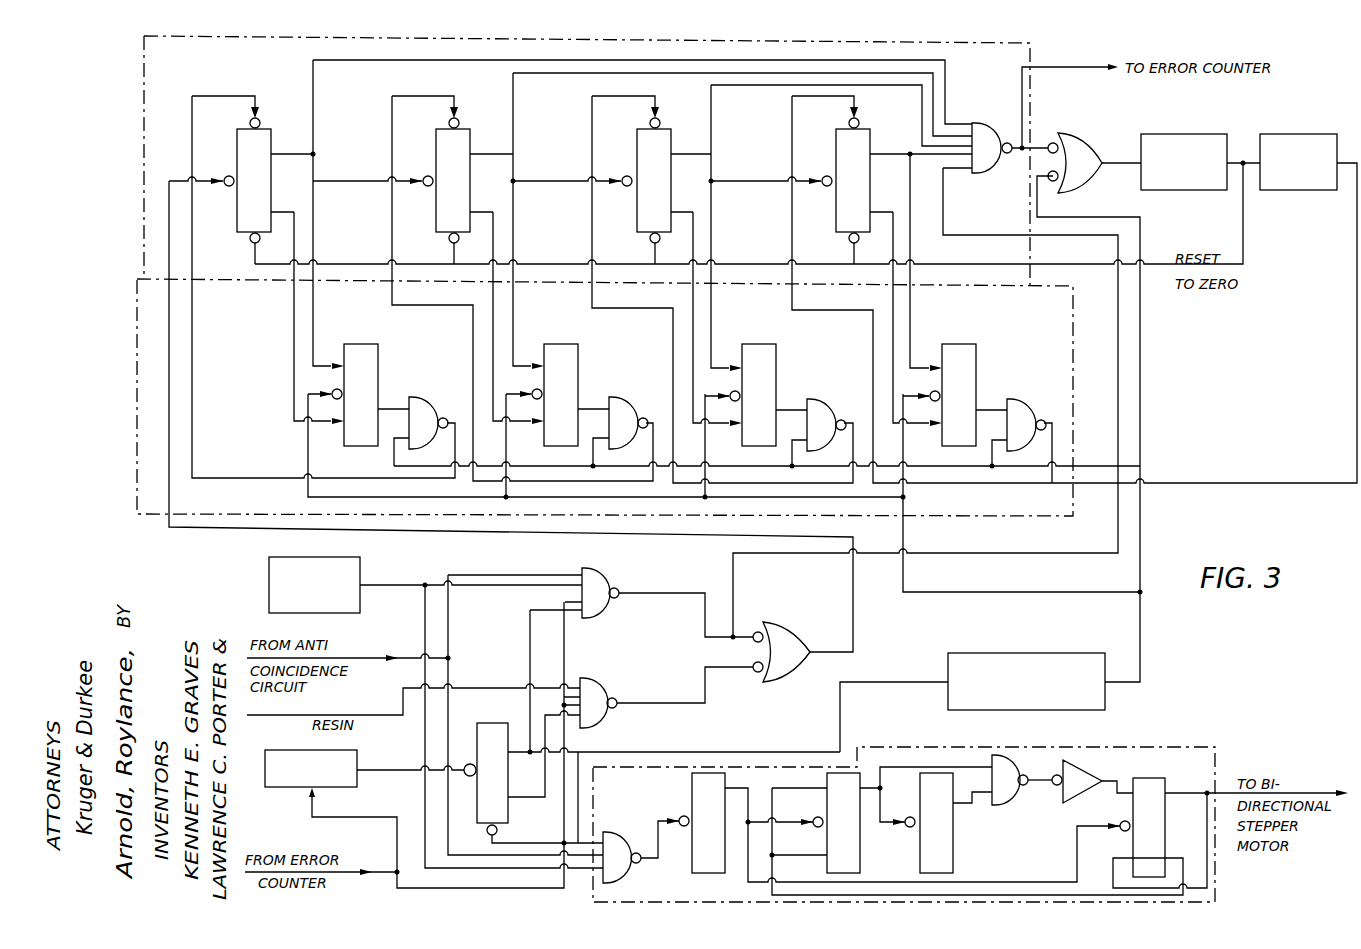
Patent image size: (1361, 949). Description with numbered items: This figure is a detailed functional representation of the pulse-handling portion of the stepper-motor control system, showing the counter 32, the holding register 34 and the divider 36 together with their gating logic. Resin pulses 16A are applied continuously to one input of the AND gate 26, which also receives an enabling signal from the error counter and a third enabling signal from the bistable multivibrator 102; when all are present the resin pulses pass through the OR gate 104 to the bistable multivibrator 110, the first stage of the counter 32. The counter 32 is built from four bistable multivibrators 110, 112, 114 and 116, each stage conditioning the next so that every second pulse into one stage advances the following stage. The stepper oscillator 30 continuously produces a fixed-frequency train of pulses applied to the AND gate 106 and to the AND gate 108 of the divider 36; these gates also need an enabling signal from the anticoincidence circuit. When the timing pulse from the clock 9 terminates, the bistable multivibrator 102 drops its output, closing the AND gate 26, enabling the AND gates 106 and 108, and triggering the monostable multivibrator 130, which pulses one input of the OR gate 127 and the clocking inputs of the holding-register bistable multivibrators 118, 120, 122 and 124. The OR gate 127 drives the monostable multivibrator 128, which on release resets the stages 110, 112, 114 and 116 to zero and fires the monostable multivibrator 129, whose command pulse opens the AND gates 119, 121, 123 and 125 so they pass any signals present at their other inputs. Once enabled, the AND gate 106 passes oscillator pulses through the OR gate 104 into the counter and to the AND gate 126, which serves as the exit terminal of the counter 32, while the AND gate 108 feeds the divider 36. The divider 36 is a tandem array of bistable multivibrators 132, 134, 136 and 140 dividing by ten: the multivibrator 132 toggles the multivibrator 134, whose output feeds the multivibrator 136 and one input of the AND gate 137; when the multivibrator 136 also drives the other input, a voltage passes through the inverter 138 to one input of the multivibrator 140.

The clock 9 is at (280, 790).
The resin pulses 16A is at (477, 692).
The AND gate 26 is at (598, 678).
The stepper oscillator 30 is at (361, 564).
The counter 32 is at (144, 90).
The holding register 34 is at (137, 333).
The divider 36 is at (1133, 748).
The bistable multivibrator 102 is at (484, 724).
The OR gate 104 is at (796, 614).
The AND gate 106 is at (596, 568).
The AND gate 108 is at (627, 822).
The bistable multivibrator 110 is at (282, 116).
The bistable multivibrator 112 is at (481, 116).
The bistable multivibrator 114 is at (682, 116).
The bistable multivibrator 116 is at (881, 116).
The bistable multivibrator 118 is at (378, 350).
The AND gate 119 is at (434, 388).
The bistable multivibrator 120 is at (578, 350).
The AND gate 121 is at (634, 388).
The bistable multivibrator 122 is at (776, 350).
The AND gate 123 is at (834, 389).
The bistable multivibrator 124 is at (976, 350).
The AND gate 125 is at (1026, 399).
The AND gate 126 is at (983, 118).
The OR gate 127 is at (1068, 134).
The monostable multivibrator 128 is at (1180, 134).
The monostable multivibrator 129 is at (1293, 134).
The monostable multivibrator 130 is at (1030, 652).
The bistable multivibrator 132 is at (692, 784).
The bistable multivibrator 134 is at (860, 840).
The bistable multivibrator 136 is at (953, 845).
The AND gate 137 is at (1005, 805).
The inverter 138 is at (1062, 804).
The bistable multivibrator 140 is at (1176, 771).